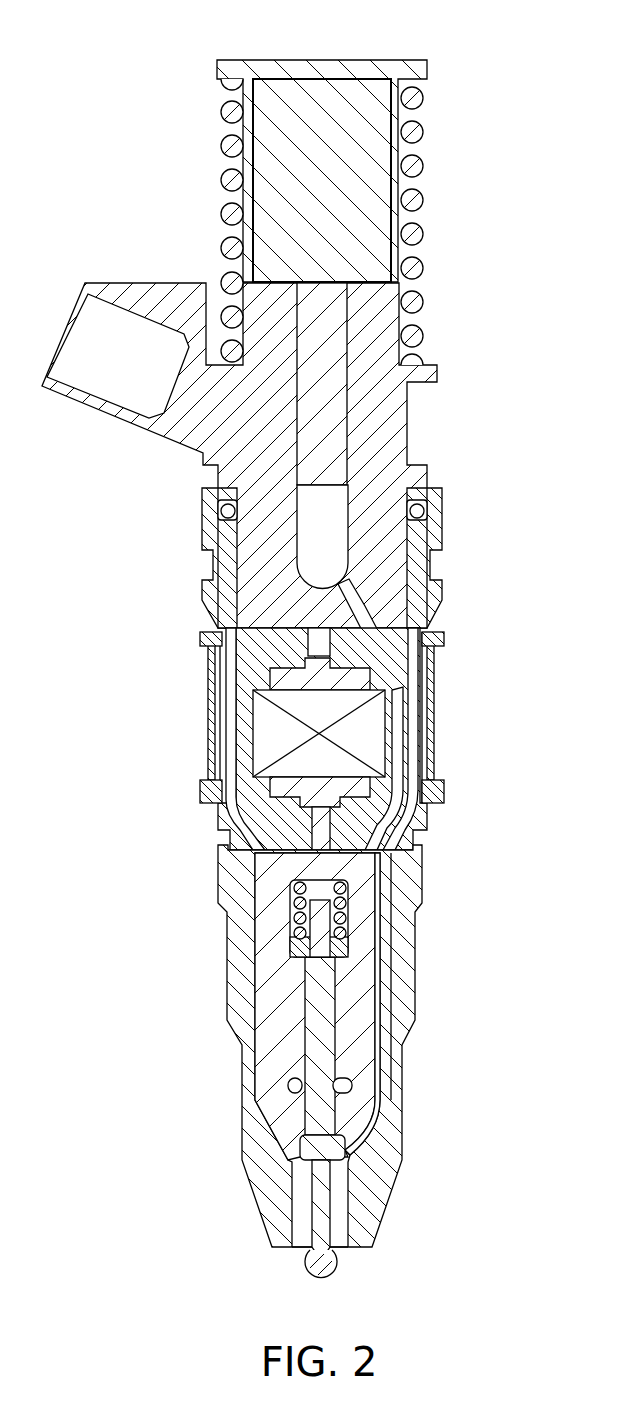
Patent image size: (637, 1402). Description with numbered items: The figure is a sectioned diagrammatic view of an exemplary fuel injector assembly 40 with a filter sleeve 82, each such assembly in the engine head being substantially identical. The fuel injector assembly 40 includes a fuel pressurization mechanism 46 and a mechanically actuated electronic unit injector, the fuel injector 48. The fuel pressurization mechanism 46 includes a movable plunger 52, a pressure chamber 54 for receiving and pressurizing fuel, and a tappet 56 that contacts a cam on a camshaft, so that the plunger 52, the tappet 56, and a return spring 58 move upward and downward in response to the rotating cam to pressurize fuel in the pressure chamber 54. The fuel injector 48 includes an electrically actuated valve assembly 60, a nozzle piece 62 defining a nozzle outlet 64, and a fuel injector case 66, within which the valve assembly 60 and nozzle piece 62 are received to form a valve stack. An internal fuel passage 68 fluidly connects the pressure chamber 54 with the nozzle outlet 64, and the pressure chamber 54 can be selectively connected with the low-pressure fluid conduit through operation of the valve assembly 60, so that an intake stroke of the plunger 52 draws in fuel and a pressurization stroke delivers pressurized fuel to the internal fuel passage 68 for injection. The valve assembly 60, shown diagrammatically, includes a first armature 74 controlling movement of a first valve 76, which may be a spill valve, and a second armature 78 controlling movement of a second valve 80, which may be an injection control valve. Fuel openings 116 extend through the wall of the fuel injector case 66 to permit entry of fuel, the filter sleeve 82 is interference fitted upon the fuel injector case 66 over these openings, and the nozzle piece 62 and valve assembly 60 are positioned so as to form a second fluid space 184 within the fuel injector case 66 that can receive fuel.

The fuel injector assembly 40 is at (145, 283).
The fuel pressurization mechanism 46 is at (388, 322).
The fuel injector 48 is at (443, 512).
The plunger 52 is at (348, 387).
The pressure chamber 54 is at (312, 513).
The tappet 56 is at (330, 60).
The return spring 58 is at (428, 128).
The electrically actuated valve assembly 60 is at (393, 692).
The nozzle piece 62 is at (267, 963).
The nozzle outlet 64 is at (303, 1264).
The fuel injector case 66 is at (417, 972).
The internal fuel passage 68 is at (405, 729).
The first armature 74 is at (246, 668).
The first valve 76 is at (310, 647).
The second armature 78 is at (367, 786).
The second valve 80 is at (333, 817).
The filter sleeve 82 is at (203, 792).
The fuel openings 116 is at (208, 735).
The second fluid space 184 is at (232, 652).